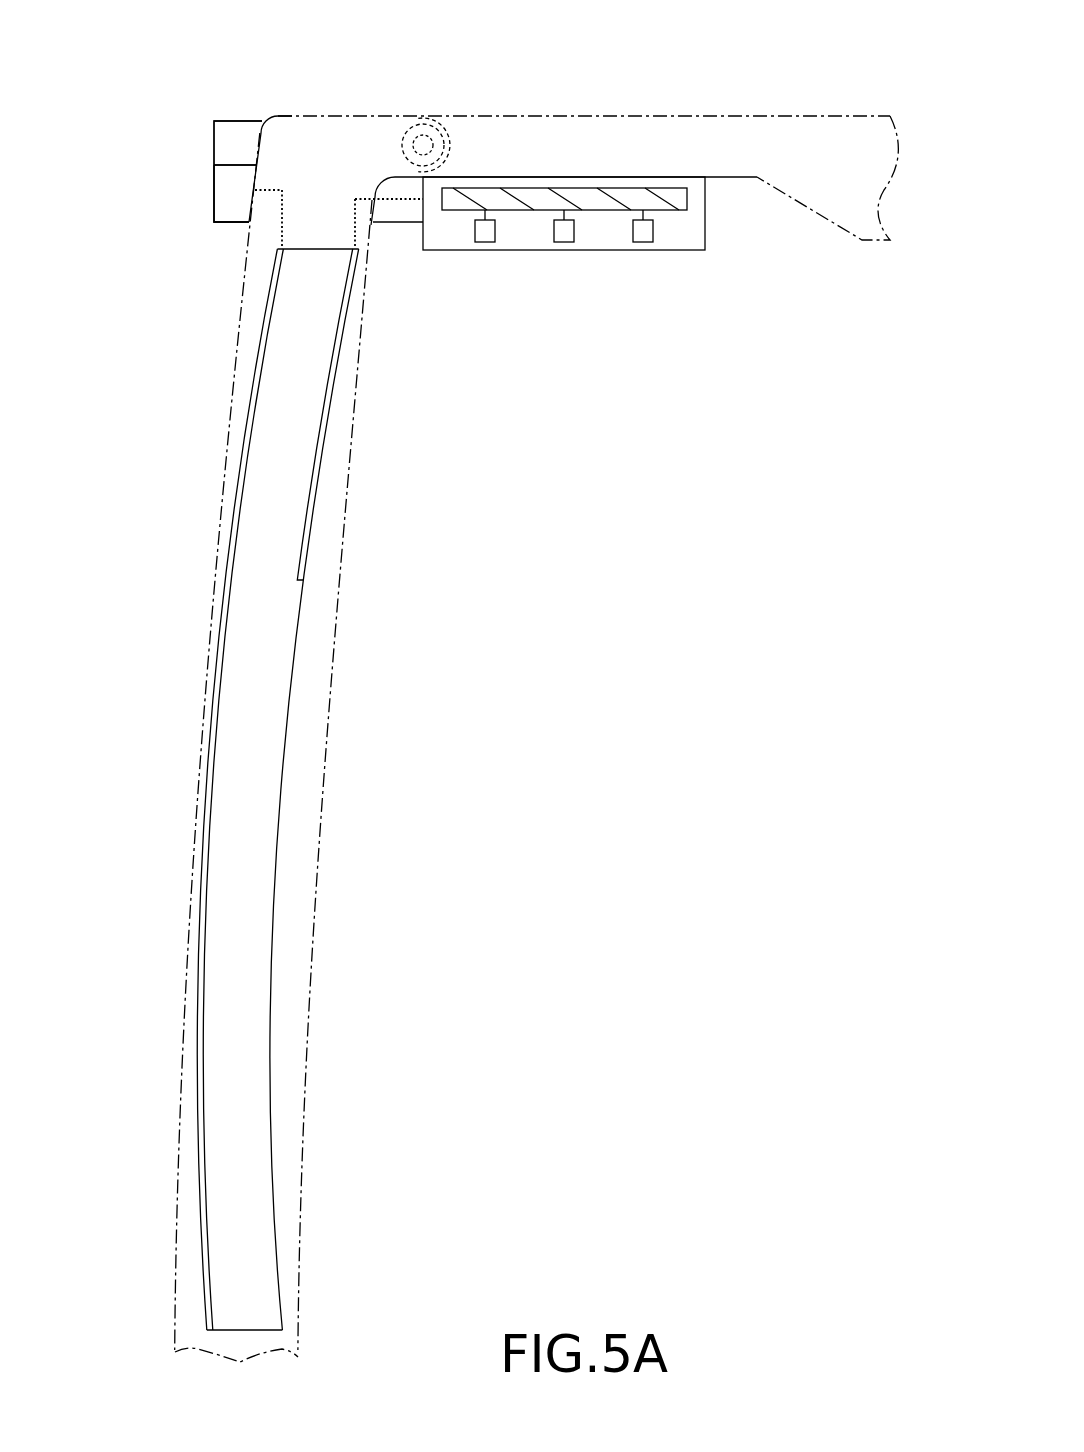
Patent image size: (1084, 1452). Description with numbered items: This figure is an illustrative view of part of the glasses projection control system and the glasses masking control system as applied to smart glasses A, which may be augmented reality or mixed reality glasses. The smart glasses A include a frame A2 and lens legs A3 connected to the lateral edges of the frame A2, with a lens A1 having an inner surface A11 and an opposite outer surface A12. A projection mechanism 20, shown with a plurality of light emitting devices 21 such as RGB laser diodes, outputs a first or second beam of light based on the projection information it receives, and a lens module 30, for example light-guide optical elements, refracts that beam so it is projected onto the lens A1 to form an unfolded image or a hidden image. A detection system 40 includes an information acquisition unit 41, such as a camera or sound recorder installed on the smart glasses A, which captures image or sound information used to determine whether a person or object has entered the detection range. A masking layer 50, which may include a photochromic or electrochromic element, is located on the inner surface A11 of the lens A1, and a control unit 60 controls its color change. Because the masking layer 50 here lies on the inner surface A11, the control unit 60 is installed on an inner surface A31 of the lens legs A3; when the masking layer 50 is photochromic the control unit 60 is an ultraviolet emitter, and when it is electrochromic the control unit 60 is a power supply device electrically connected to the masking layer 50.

The smart glasses A is at (700, 102).
The lens A1 is at (260, 789).
The inner surface A11 is at (282, 752).
The outer surface A12 is at (240, 520).
The frame A2 is at (322, 616).
The lens legs A3 is at (862, 122).
The inner surface of the lens legs A31 is at (757, 181).
The projection mechanism 20 is at (650, 325).
The light emitting device 21 is at (623, 292).
The lens module 30 is at (587, 178).
The detection system 40 is at (222, 145).
The information acquisition unit 41 is at (238, 171).
The masking layer 50 is at (212, 700).
The control unit 60 is at (222, 203).